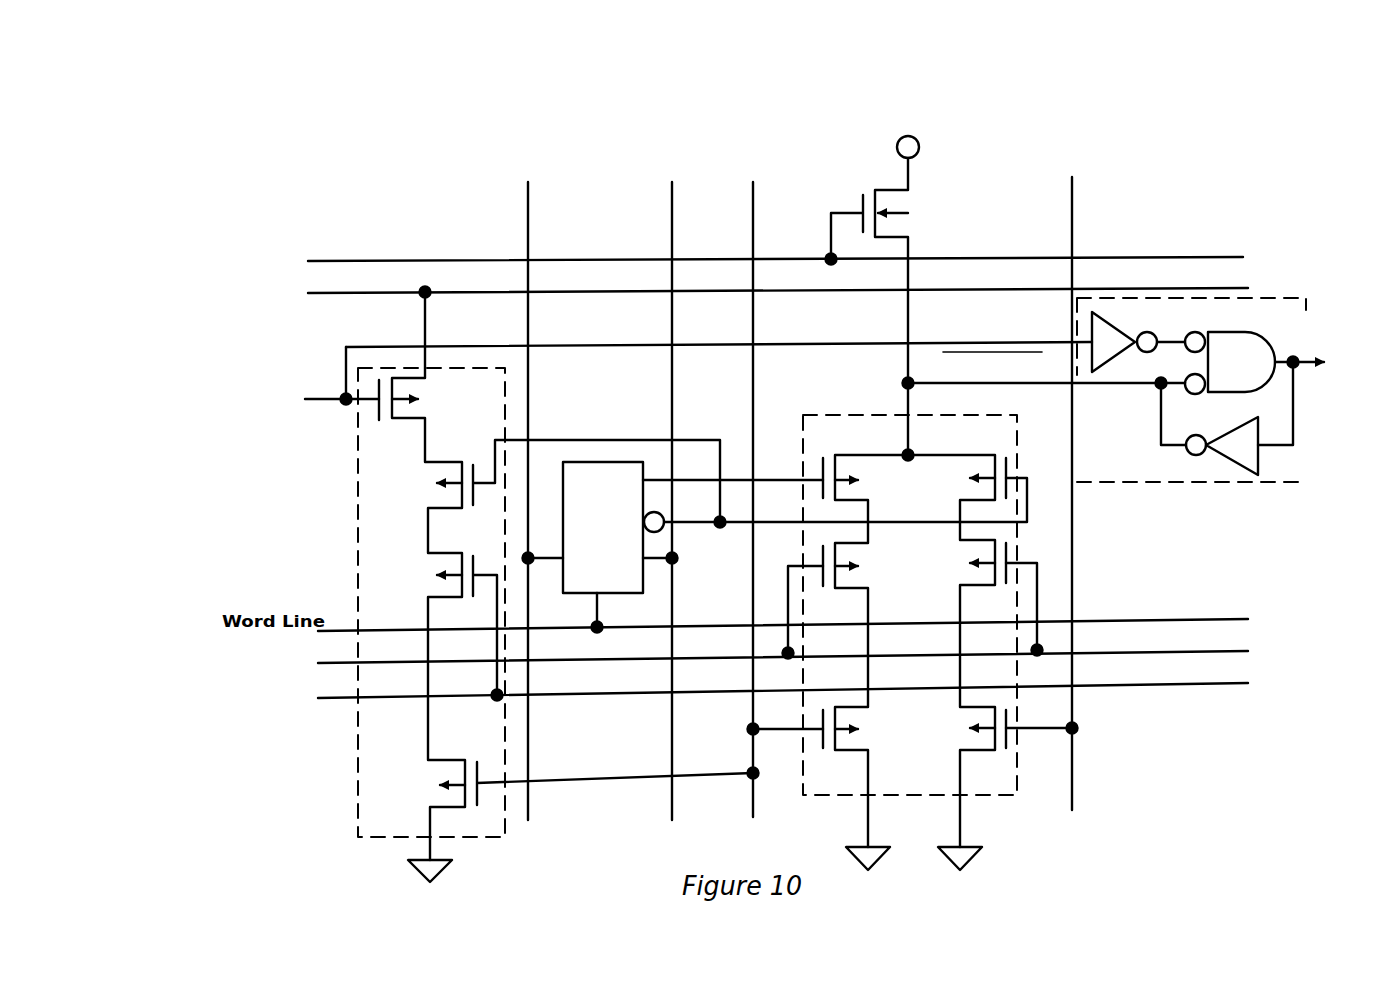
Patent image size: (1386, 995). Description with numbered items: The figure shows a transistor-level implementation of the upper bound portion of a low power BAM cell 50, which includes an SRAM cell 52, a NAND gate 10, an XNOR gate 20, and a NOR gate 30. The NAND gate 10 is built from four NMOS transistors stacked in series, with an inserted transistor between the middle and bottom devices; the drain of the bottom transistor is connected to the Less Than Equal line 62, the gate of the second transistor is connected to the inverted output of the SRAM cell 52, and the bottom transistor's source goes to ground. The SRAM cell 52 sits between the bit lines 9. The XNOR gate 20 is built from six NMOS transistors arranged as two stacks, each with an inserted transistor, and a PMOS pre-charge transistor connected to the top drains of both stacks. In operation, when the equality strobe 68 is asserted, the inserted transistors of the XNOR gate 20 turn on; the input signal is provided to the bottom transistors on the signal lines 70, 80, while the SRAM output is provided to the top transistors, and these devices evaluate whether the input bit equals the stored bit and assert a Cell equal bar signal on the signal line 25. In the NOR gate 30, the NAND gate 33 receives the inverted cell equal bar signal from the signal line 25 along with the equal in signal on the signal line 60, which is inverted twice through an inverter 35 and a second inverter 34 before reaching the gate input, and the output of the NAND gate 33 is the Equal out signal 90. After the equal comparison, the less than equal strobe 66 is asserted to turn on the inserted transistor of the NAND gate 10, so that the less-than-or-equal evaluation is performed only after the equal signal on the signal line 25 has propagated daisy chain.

The low power BAM cell 50 is at (722, 94).
The signal line 70 is at (786, 137).
The signal line 80 is at (1092, 156).
The Less Than Equal line 62 is at (480, 282).
The equal in signal line 60 is at (446, 340).
The bit lines 9 is at (533, 196).
The SRAM cell 52 is at (621, 583).
The NAND gate 10 is at (358, 733).
The equality strobe 68 is at (352, 660).
The less than equal strobe 66 is at (396, 684).
The XNOR gate 20 is at (1019, 772).
The signal line 25 is at (1046, 370).
The NOR gate 30 is at (1300, 452).
The inverter 35 is at (1138, 342).
The NAND gate 33 is at (1244, 364).
The inverter 34 is at (1254, 455).
The Equal Out line 90 is at (1330, 350).